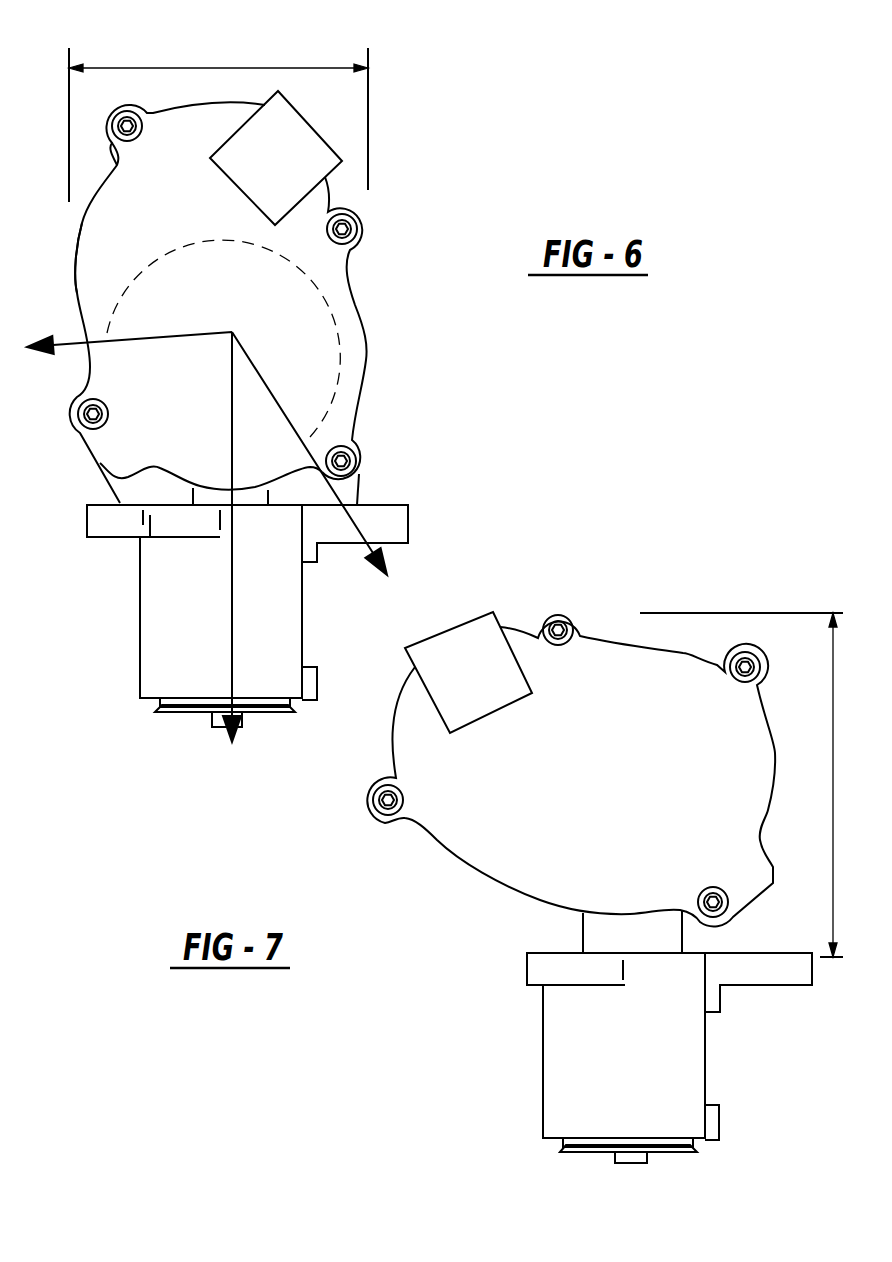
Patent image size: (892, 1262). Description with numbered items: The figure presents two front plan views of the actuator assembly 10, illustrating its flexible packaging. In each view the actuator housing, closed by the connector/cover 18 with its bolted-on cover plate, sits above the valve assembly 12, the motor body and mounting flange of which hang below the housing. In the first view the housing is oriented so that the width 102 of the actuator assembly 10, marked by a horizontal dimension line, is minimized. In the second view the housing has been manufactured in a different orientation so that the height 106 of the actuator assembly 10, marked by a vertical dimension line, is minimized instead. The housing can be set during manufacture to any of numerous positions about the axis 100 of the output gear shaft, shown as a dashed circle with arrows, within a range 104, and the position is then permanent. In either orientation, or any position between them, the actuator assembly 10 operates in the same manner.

In FIG. 6, the actuator assembly 10 is at (280, 409).
In FIG. 7, the actuator assembly 10 is at (590, 839).
In FIG. 6, the valve assembly 12 is at (337, 588).
In FIG. 7, the valve assembly 12 is at (767, 1032).
In FIG. 6, the connector/cover 18 is at (340, 292).
In FIG. 7, the connector/cover 18 is at (482, 846).
In FIG. 6, the axis 100 is at (253, 357).
In FIG. 6, the width 102 is at (178, 68).
In FIG. 6, the range 104 is at (140, 273).
In FIG. 7, the height 106 is at (830, 737).